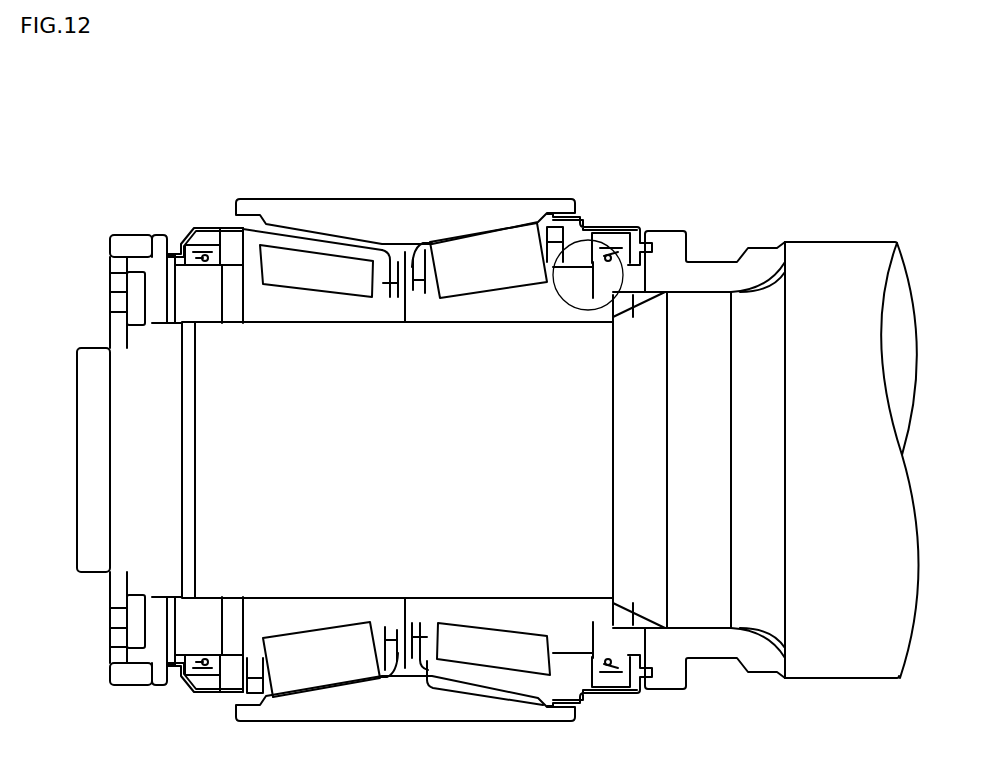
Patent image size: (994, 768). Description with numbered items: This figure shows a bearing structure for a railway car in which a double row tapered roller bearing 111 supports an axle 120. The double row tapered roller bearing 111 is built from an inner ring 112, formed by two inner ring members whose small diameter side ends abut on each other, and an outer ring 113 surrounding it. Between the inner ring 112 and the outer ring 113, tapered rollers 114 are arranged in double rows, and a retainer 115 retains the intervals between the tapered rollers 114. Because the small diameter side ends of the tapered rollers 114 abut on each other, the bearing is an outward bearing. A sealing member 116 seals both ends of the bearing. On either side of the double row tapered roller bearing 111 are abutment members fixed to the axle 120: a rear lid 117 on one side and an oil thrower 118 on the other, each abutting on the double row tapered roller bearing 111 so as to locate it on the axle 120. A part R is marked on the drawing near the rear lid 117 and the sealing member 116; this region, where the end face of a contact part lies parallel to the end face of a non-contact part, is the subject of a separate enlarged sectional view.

The double row tapered roller bearing 111 is at (102, 161).
The inner ring 112 is at (289, 305).
The outer ring 113 is at (402, 213).
The tapered rollers 114 is at (498, 258).
The retainer 115 is at (337, 247).
The sealing member 116 is at (609, 262).
The rear lid 117 is at (665, 247).
The oil thrower 118 is at (197, 293).
The part R is at (632, 231).
The axle 120 is at (827, 272).